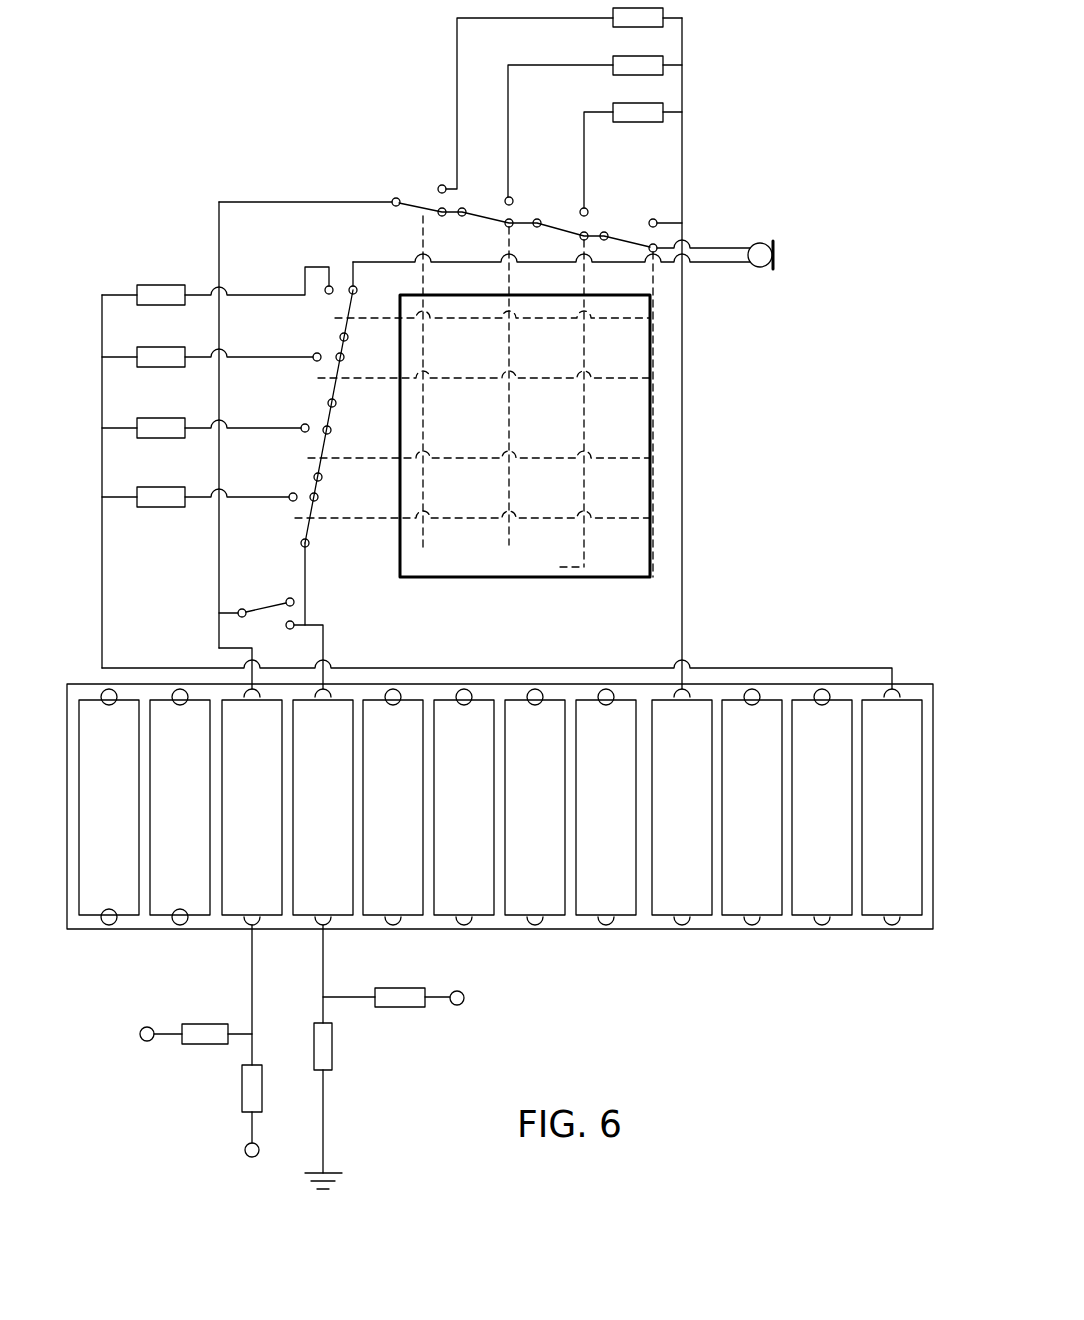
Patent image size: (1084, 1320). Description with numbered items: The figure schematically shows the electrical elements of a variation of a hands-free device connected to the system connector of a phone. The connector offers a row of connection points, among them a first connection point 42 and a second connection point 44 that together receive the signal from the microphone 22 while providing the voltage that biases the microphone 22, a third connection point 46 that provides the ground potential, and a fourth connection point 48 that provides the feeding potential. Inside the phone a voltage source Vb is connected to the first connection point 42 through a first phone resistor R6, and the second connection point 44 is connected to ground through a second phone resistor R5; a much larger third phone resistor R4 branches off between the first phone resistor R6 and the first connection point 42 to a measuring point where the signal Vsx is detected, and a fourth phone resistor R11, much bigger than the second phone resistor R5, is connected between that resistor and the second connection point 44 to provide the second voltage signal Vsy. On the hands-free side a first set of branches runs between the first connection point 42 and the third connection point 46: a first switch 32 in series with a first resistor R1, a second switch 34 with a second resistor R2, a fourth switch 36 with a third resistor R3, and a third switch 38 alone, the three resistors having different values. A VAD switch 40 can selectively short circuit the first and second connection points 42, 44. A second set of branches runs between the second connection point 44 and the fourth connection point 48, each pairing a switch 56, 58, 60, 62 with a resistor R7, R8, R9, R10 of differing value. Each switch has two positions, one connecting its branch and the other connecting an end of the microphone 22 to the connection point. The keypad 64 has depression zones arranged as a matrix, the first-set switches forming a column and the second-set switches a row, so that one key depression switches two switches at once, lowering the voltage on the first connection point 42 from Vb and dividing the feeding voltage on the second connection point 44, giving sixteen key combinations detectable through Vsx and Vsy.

The microphone 22 is at (791, 262).
The first switch 32 is at (429, 183).
The second switch 34 is at (505, 194).
The fourth switch 36 is at (576, 207).
The third switch 38 is at (648, 219).
The VAD switch 40 is at (256, 630).
The first connection point 42 is at (252, 807).
The second connection point 44 is at (323, 807).
The third connection point 46 is at (682, 807).
The fourth connection point 48 is at (892, 807).
The switch 56 is at (323, 313).
The switch 58 is at (311, 380).
The switch 60 is at (298, 452).
The switch 62 is at (285, 520).
The keypad 64 is at (486, 555).
The first resistor R1 is at (564, 98).
The second resistor R2 is at (595, 126).
The third resistor R3 is at (633, 155).
The third phone resistor R4 is at (203, 1052).
The second phone resistor R5 is at (299, 1046).
The first phone resistor R6 is at (228, 1088).
The resistor R7 is at (215, 304).
The resistor R8 is at (207, 377).
The resistor R9 is at (201, 452).
The resistor R10 is at (195, 525).
The fourth phone resistor R11 is at (411, 1016).
The signal Vsx is at (123, 1023).
The second voltage signal Vsy is at (475, 985).
The voltage source Vb is at (272, 1138).